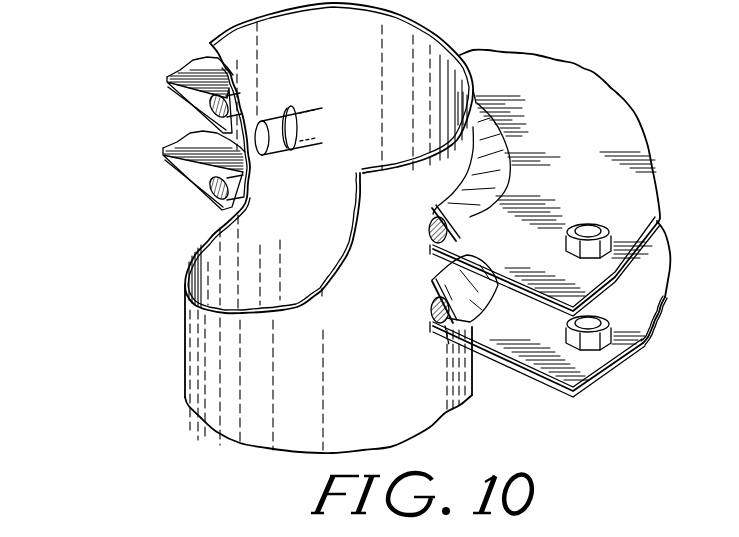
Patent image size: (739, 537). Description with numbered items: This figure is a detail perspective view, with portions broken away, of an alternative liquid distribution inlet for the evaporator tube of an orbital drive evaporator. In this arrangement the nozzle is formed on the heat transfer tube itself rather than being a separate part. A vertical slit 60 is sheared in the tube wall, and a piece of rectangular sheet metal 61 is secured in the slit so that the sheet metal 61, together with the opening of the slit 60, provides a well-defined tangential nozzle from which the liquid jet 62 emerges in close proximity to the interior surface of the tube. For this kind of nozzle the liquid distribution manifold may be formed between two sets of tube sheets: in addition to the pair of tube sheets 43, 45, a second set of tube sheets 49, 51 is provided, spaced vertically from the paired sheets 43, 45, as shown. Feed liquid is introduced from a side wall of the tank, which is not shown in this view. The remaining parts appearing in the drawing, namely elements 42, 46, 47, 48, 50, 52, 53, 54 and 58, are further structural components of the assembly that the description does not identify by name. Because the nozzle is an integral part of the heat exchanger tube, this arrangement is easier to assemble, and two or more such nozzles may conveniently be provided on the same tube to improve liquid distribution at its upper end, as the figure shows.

The curved mounting flange 42 is at (505, 140).
The tube sheet 43 is at (570, 114).
The tube sheet 45 is at (530, 290).
The bolt 46 is at (428, 235).
The bolt 47 is at (590, 225).
The nut 48 is at (565, 243).
The tube sheet 49 is at (655, 290).
The curved spacer flange 50 is at (474, 292).
The tube sheet 51 is at (540, 381).
The bolt 52 is at (444, 337).
The bolt 53 is at (430, 308).
The plate edge flange 54 is at (645, 335).
The nut 58 is at (592, 318).
The vertical slit 60 is at (279, 108).
The piece of rectangular sheet metal 61 is at (273, 142).
The liquid jet 62 is at (252, 165).